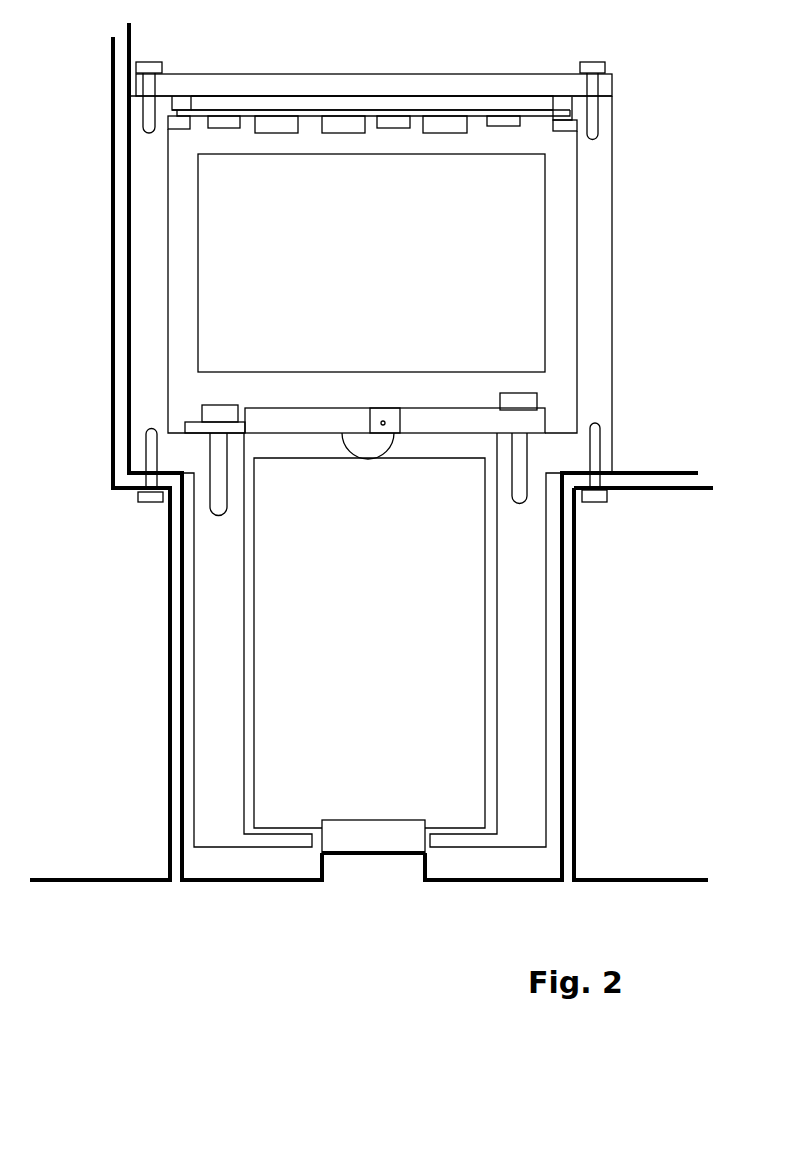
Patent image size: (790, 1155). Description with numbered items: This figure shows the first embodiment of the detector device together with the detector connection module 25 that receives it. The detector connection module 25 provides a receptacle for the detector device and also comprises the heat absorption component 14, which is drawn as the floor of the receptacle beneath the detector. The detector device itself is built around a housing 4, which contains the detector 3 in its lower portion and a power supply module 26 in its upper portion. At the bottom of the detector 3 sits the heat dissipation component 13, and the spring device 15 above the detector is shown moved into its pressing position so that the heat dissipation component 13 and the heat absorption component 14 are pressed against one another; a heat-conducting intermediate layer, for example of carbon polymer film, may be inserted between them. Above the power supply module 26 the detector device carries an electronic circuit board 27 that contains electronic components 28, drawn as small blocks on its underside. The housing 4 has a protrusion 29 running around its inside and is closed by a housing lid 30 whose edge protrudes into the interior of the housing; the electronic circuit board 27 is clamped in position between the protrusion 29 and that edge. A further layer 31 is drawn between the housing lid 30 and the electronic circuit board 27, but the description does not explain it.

The detector 3 is at (369, 634).
The housing 4 is at (525, 598).
The heat dissipation component 13 is at (362, 828).
The heat absorption component 14 is at (361, 862).
The spring device 15 is at (387, 393).
The detector connection module 25 is at (68, 362).
The power supply module 26 is at (540, 225).
The electronic circuit board 27 is at (397, 113).
The electronic components 28 is at (497, 125).
The protrusion 29 is at (178, 128).
The housing lid 30 is at (322, 82).
The intermediate layer 31 is at (562, 97).